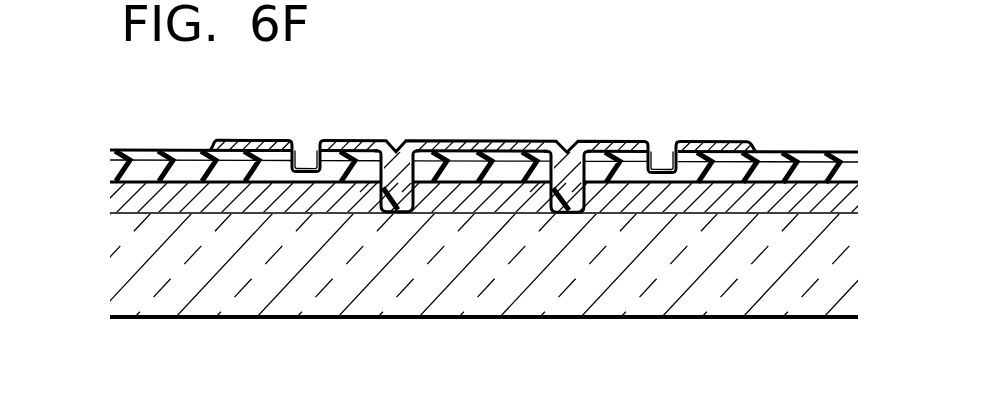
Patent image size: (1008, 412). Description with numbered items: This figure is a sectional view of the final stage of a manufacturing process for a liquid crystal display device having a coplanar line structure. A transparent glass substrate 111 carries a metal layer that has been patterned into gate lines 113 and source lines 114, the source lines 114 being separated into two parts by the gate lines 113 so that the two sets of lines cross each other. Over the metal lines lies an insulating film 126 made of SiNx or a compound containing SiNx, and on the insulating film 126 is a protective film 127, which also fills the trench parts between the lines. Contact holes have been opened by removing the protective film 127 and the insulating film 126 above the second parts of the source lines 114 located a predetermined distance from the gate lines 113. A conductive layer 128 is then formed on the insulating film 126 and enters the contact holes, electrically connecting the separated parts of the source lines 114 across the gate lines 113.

The transparent glass substrate 111 is at (565, 303).
The gate line 113 is at (455, 202).
The source line 114 is at (843, 203).
The insulating film 126 is at (148, 170).
The protective film 127 is at (182, 162).
The conductive layer 128 is at (528, 142).